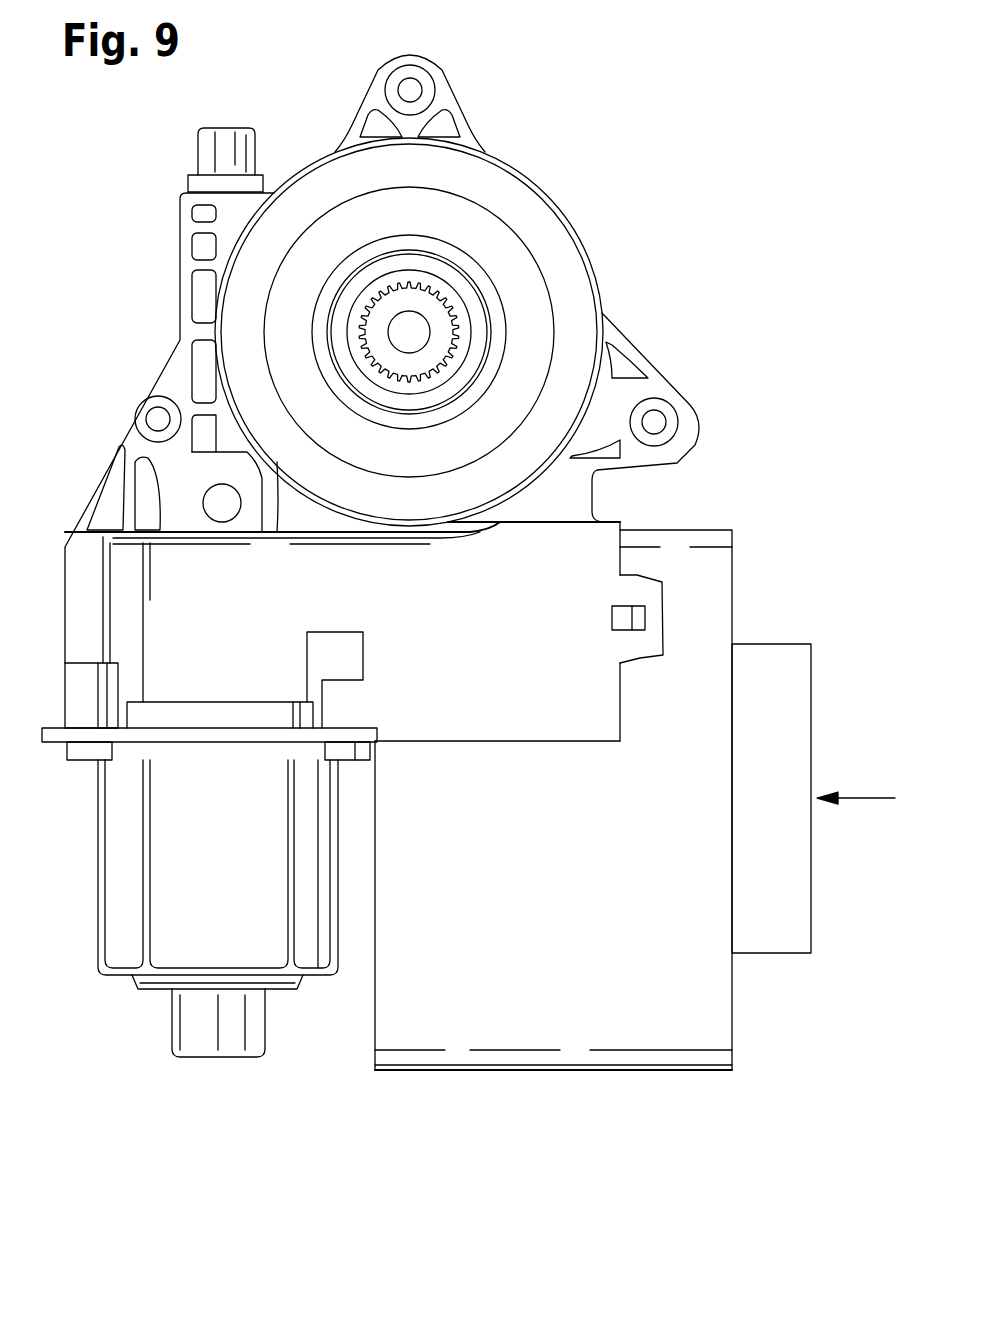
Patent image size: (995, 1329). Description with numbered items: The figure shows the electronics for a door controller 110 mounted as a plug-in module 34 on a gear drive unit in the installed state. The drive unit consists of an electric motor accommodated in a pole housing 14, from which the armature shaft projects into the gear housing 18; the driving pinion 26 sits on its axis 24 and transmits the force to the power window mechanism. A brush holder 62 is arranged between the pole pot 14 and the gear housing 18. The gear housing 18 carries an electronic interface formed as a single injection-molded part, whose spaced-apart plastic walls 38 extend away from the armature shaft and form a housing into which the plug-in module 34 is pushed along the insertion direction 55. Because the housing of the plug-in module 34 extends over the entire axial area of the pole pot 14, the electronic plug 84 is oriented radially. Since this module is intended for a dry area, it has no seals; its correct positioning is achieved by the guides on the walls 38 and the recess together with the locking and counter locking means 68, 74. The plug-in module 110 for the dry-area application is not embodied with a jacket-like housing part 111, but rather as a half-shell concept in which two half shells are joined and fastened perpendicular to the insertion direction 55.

The pole housing 14 is at (125, 845).
The gear housing 18 is at (195, 625).
The axis 24 is at (412, 330).
The driving pinion 26 is at (440, 338).
The walls 38 is at (497, 665).
The brush holder 62 is at (162, 715).
The locking means 68 is at (637, 590).
The counter locking means 74 is at (647, 617).
The insertion direction 55 is at (865, 798).
The electronic plug 84 is at (770, 878).
The door controller electronics 110 is at (526, 872).
The plug-in module 34 is at (452, 1097).
The jacket-like housing part 111 is at (583, 987).